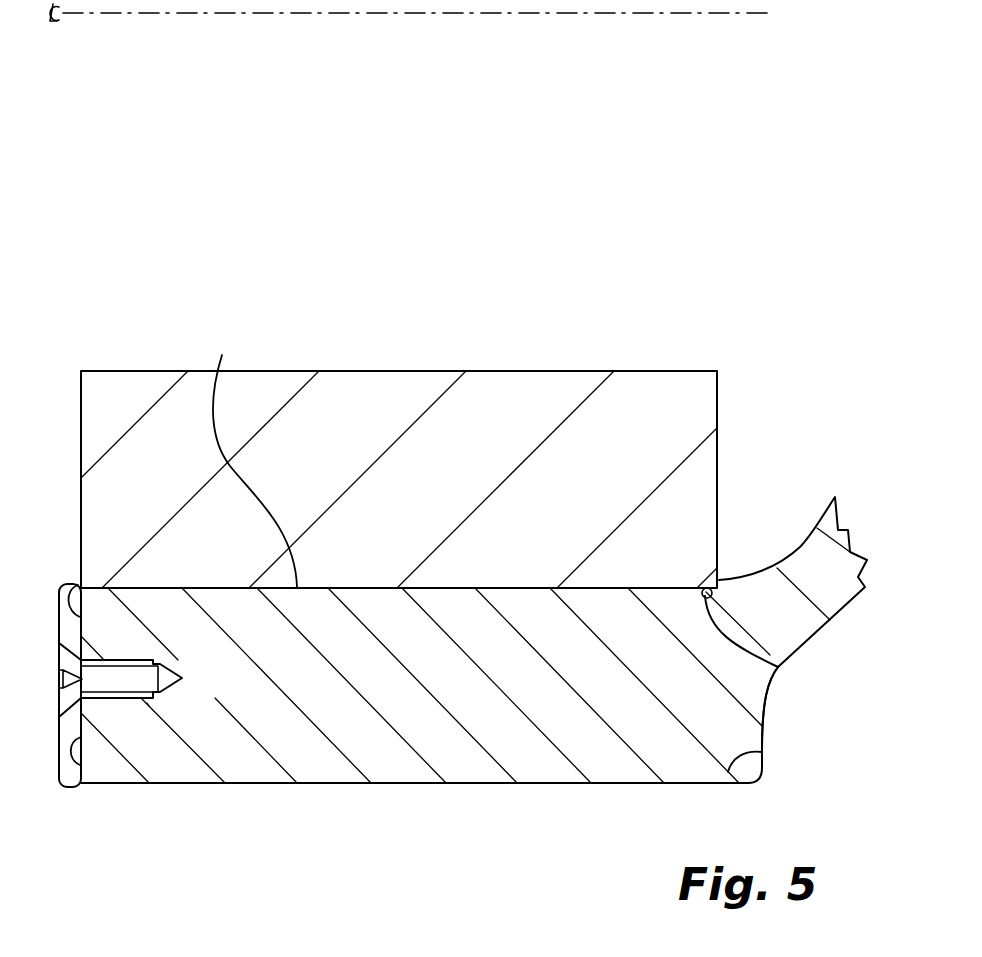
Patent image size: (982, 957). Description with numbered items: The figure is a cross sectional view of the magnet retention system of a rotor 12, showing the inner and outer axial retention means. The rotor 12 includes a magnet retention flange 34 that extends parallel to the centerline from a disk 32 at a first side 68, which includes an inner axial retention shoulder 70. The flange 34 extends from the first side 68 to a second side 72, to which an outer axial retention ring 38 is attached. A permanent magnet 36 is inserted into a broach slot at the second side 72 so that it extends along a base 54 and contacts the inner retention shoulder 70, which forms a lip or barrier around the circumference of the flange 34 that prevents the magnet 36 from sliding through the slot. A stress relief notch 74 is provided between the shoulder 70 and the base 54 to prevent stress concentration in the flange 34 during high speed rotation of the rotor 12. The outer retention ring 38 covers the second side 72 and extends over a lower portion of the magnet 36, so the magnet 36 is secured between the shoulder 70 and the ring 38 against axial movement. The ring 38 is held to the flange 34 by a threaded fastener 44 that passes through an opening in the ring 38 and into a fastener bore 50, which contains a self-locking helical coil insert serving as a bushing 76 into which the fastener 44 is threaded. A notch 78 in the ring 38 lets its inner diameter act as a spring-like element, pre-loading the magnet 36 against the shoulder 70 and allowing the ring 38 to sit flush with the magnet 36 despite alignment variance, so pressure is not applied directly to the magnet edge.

The rotor 12 is at (160, 853).
The disk 32 is at (802, 547).
The magnet retention flange 34 is at (313, 760).
The permanent magnet 36 is at (337, 427).
The outer axial retention ring 38 is at (63, 777).
The fastener 44 is at (100, 734).
The fastener bore 50 is at (147, 703).
The base 54 is at (252, 456).
The first side 68 is at (728, 772).
The inner axial retention shoulder 70 is at (722, 580).
The second side 72 is at (93, 702).
The stress relief notch 74 is at (780, 670).
The bushing 76 is at (120, 702).
The notch 78 is at (70, 590).